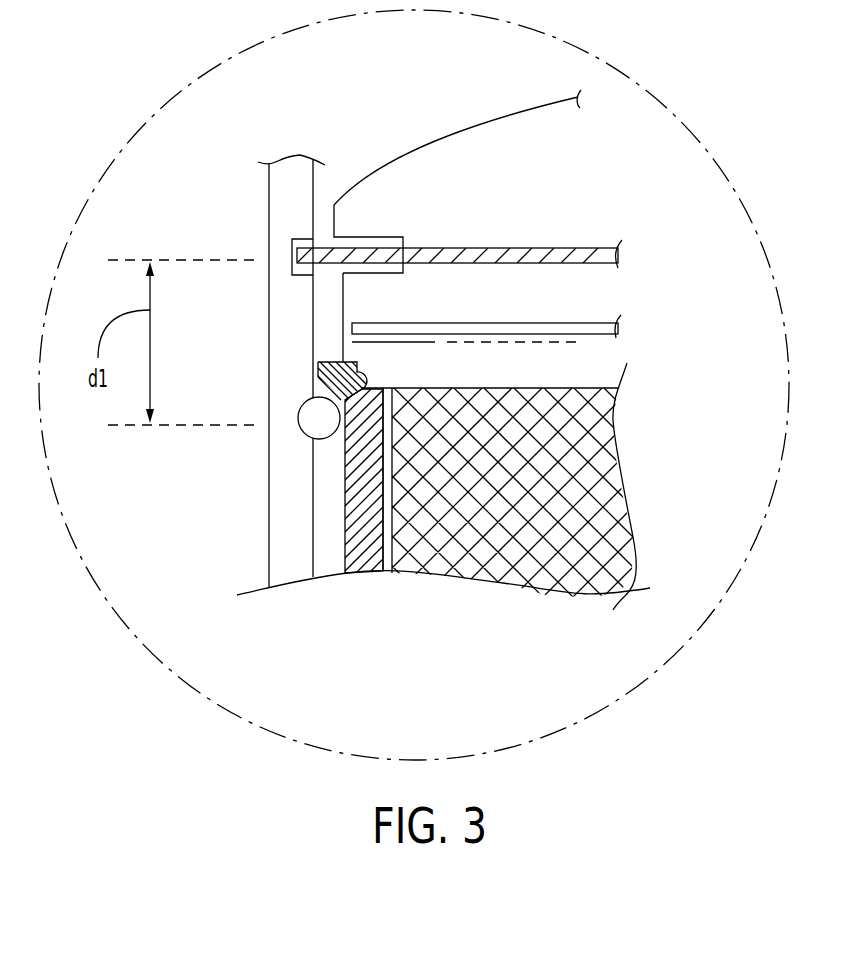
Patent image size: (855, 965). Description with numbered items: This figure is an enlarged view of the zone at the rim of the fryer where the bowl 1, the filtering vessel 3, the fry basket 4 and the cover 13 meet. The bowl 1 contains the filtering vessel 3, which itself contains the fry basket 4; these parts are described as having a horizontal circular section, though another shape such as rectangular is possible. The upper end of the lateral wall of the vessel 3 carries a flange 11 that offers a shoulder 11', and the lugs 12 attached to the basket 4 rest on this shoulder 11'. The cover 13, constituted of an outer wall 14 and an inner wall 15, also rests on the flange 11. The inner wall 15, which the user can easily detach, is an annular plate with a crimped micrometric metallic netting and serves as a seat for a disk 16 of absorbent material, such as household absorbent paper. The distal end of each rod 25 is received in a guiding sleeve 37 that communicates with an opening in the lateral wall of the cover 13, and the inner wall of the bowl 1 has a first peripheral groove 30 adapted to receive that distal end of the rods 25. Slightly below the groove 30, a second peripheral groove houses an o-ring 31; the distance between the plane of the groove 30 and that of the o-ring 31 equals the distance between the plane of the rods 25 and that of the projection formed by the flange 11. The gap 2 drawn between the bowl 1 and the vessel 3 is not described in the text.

The bowl 1 is at (283, 557).
The spacer 2 is at (327, 512).
The filtering vessel 3 is at (365, 553).
The fry basket 4 is at (590, 450).
The flange 11 is at (308, 387).
The shoulder 11' is at (266, 366).
The lugs 12 is at (378, 386).
The cover 13 is at (505, 96).
The outer wall 14 is at (465, 130).
The inner wall 15 is at (343, 340).
The disk 16 is at (377, 323).
The rods 25 is at (328, 247).
The first peripheral groove 30 is at (296, 258).
The o-ring 31 is at (298, 425).
The guiding sleeve 37 is at (375, 235).